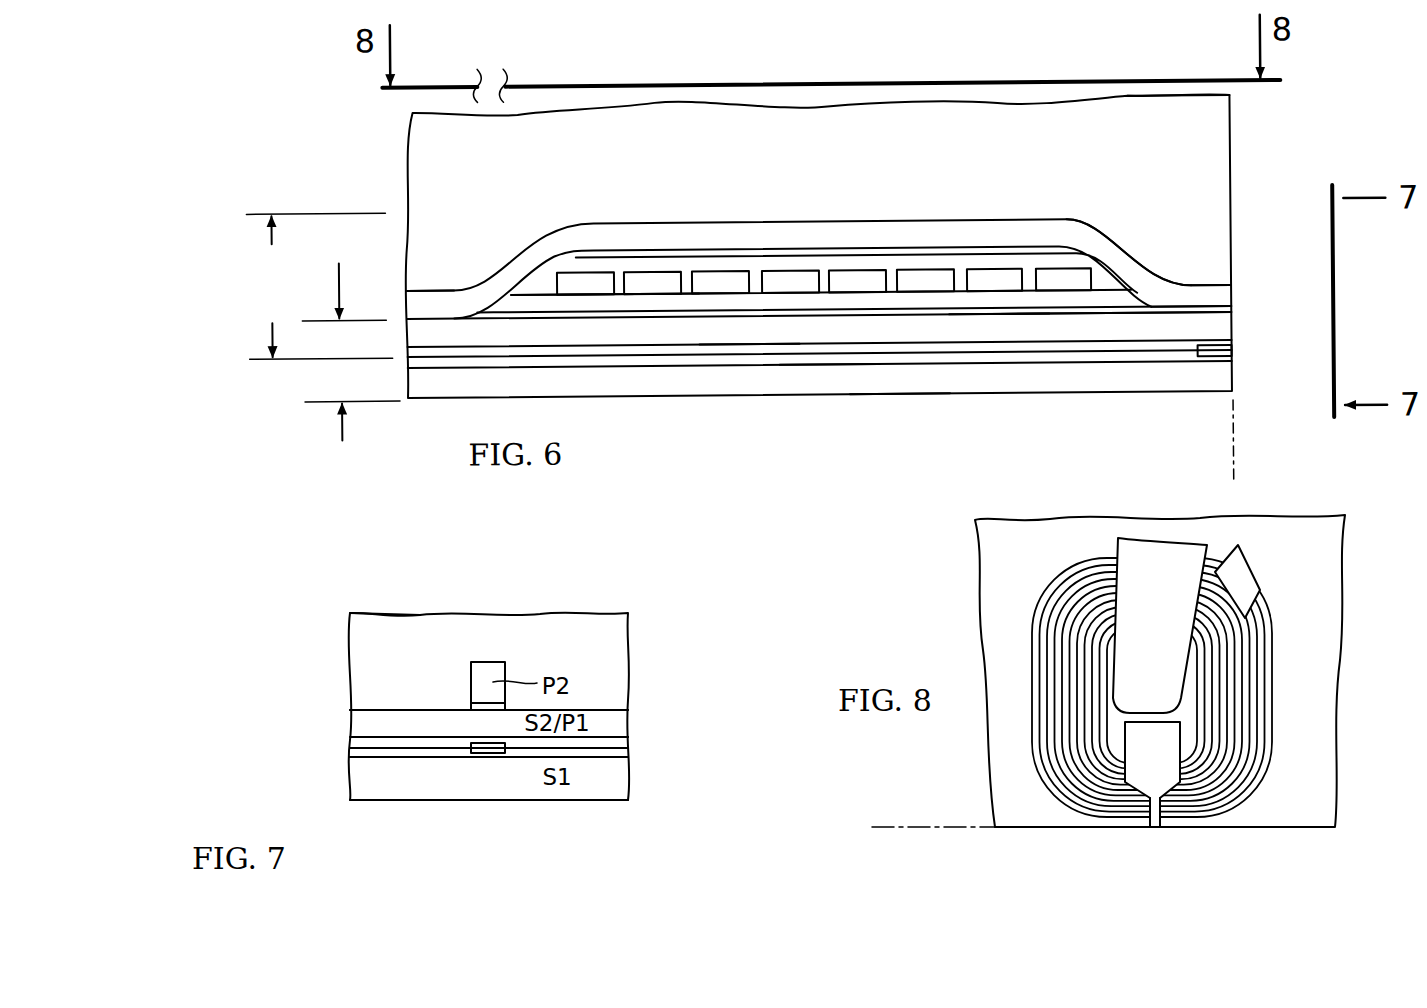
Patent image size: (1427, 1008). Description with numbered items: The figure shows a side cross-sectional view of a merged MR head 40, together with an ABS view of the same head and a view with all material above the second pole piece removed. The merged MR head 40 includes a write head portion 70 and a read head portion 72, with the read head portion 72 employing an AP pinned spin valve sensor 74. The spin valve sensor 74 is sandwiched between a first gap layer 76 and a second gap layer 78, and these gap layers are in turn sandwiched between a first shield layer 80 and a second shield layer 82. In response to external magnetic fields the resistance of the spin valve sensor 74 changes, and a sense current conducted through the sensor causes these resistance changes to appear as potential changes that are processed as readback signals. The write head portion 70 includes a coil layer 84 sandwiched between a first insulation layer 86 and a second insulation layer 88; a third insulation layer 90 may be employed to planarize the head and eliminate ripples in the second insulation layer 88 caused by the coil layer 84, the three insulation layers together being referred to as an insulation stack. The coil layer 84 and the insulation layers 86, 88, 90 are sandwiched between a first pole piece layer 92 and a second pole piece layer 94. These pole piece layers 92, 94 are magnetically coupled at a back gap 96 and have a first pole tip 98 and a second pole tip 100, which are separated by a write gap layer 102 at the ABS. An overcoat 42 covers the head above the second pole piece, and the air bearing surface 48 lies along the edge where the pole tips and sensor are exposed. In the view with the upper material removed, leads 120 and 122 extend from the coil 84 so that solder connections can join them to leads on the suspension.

In FIG. 6, the merged MR head 40 is at (392, 117).
In FIG. 7, the merged MR head 40 is at (668, 617).
In FIG. 8, the merged MR head 40 is at (1272, 622).
In FIG. 6, the overcoat layer 42 is at (1208, 135).
In FIG. 7, the overcoat layer 42 is at (357, 637).
In FIG. 6, the air bearing surface (ABS) 48 is at (1233, 430).
In FIG. 8, the air bearing surface (ABS) 48 is at (930, 825).
In FIG. 6, the write head portion 70 is at (315, 286).
In FIG. 6, the read head portion 72 is at (353, 463).
In FIG. 6, the AP pinned spin valve sensor 74 is at (1223, 357).
In FIG. 7, the AP pinned spin valve sensor 74 is at (492, 753).
In FIG. 6, the first gap layer 76 is at (825, 370).
In FIG. 7, the first gap layer 76 is at (383, 760).
In FIG. 6, the second gap layer 78 is at (748, 346).
In FIG. 7, the second gap layer 78 is at (601, 742).
In FIG. 6, the first shield layer 80 is at (899, 382).
In FIG. 7, the first shield layer 80 is at (618, 782).
In FIG. 6, the second shield layer 82 is at (999, 378).
In FIG. 7, the second shield layer 82 is at (435, 724).
In FIG. 6, the coil layer 84 is at (860, 284).
In FIG. 8, the coil layer 84 is at (1250, 722).
In FIG. 6, the first insulation layer 86 is at (667, 312).
In FIG. 6, the second insulation layer 88 is at (1107, 289).
In FIG. 6, the third insulation layer 90 is at (585, 257).
In FIG. 6, the first pole piece layer 92 is at (998, 334).
In FIG. 7, the first pole piece layer 92 is at (357, 723).
In FIG. 6, the second pole piece layer 94 is at (977, 228).
In FIG. 8, the second pole piece layer 94 is at (1167, 766).
In FIG. 6, the back gap 96 is at (433, 291).
In FIG. 6, the first pole tip 98 is at (1233, 335).
In FIG. 6, the second pole tip 100 is at (1227, 297).
In FIG. 7, the second pole tip 100 is at (493, 667).
In FIG. 8, the second pole tip 100 is at (1155, 827).
In FIG. 6, the write gap layer 102 is at (1228, 314).
In FIG. 7, the write gap layer 102 is at (485, 703).
In FIG. 8, the lead 120 is at (1173, 601).
In FIG. 8, the lead 122 is at (1240, 560).